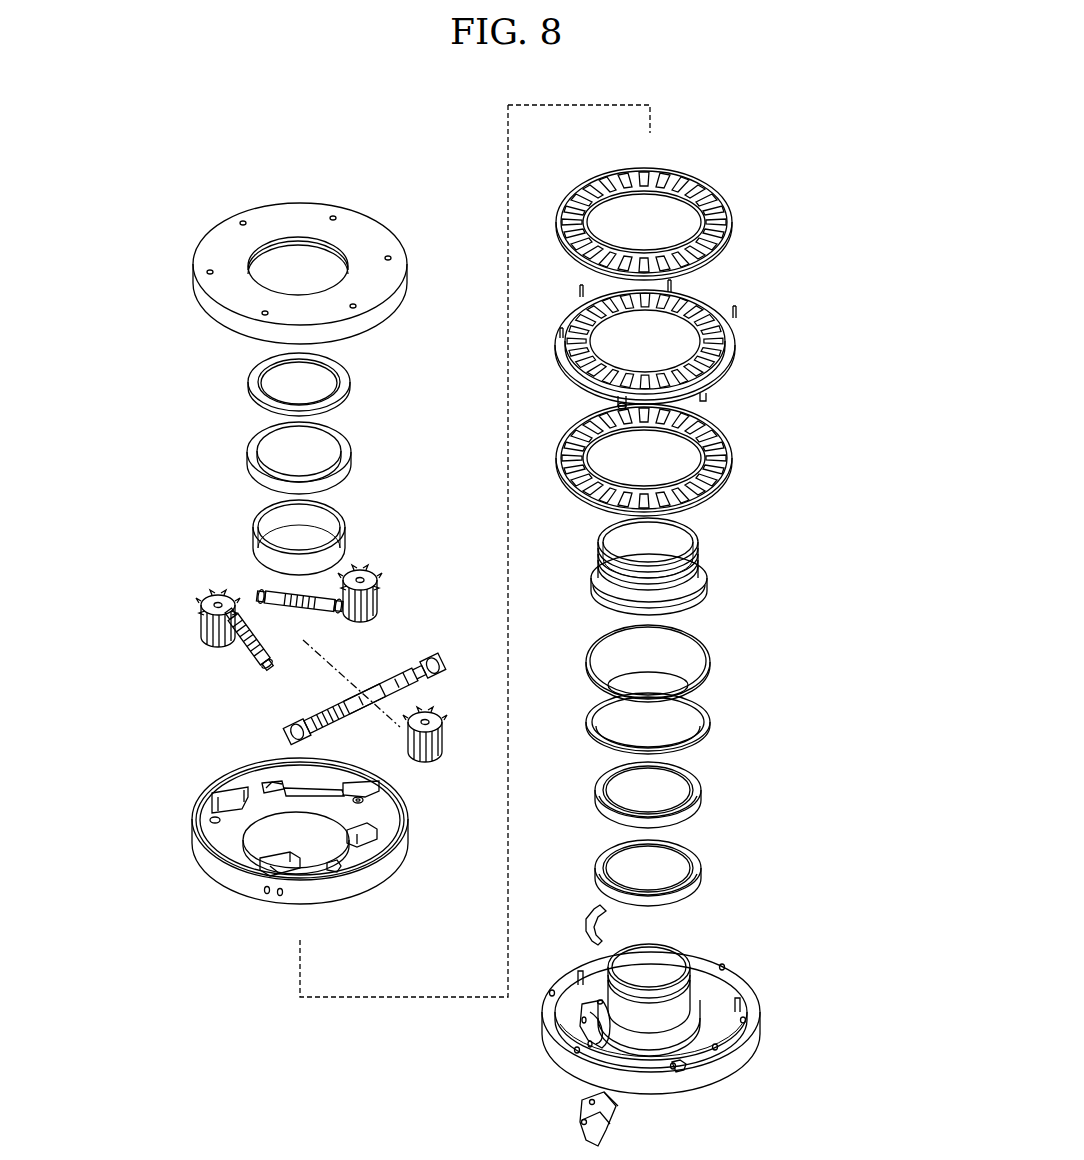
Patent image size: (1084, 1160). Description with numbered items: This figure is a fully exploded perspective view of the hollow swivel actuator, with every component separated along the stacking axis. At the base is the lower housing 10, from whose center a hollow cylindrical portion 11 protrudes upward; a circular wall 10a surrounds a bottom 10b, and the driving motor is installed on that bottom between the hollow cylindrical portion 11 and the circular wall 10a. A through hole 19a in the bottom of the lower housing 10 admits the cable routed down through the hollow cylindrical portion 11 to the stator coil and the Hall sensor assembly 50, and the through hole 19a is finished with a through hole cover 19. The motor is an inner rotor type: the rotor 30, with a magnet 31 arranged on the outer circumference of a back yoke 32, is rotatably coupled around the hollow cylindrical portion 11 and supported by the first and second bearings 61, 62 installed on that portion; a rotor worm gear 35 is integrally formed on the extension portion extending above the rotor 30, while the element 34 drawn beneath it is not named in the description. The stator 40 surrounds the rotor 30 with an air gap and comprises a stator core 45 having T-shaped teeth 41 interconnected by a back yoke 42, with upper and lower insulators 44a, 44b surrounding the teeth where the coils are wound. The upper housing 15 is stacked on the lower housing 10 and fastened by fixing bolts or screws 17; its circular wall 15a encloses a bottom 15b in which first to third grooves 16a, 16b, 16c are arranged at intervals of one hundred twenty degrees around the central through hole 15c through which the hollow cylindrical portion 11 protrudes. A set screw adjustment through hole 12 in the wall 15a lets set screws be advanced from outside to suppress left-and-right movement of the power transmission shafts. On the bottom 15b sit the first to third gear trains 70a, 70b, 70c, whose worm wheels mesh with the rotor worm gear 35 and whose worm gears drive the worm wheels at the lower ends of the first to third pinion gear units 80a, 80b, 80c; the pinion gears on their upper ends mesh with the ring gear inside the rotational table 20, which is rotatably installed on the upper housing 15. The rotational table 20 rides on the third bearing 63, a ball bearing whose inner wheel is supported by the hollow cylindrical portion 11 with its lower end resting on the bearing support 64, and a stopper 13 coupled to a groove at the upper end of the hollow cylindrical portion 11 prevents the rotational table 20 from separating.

The lower housing 10 is at (655, 1034).
The circular wall 10a is at (730, 1060).
The bottom 10b is at (730, 1033).
The hollow cylindrical portion 11 is at (690, 995).
The set screw adjustment through hole 12 is at (268, 900).
The stopper 13 is at (352, 380).
The upper housing 15 is at (291, 850).
The circular wall 15a is at (354, 890).
The bottom 15b is at (214, 825).
The through hole 15c is at (250, 870).
The first groove 16a is at (221, 784).
The second groove 16b is at (313, 894).
The third groove 16c is at (365, 788).
The fixing bolts or screws 17 is at (685, 1068).
The through hole cover 19 is at (582, 1121).
The through hole 19a is at (552, 1017).
The rotational table 20 is at (410, 258).
The rotor 30 is at (710, 689).
The magnet 31 is at (712, 655).
The back yoke 32 is at (710, 708).
The flange of threaded sleeve 34 is at (708, 595).
The rotor worm gear 35 is at (698, 540).
The stator 40 is at (721, 342).
The teeth 41 is at (740, 365).
The back yoke 42 is at (738, 335).
The upper insulator 44a is at (735, 200).
The lower insulator 44b is at (694, 460).
The stator core 45 is at (696, 344).
The Hall sensor assembly 50 is at (608, 920).
The first bearing 61 is at (703, 868).
The second bearing 62 is at (703, 790).
The third bearing 63 is at (354, 443).
The bearing support 64 is at (347, 522).
The first gear train 70a is at (230, 661).
The second gear train 70b is at (448, 764).
The third gear train 70c is at (392, 603).
The first pinion gear unit 80a is at (187, 611).
The second pinion gear unit 80b is at (325, 690).
The third pinion gear unit 80c is at (384, 572).